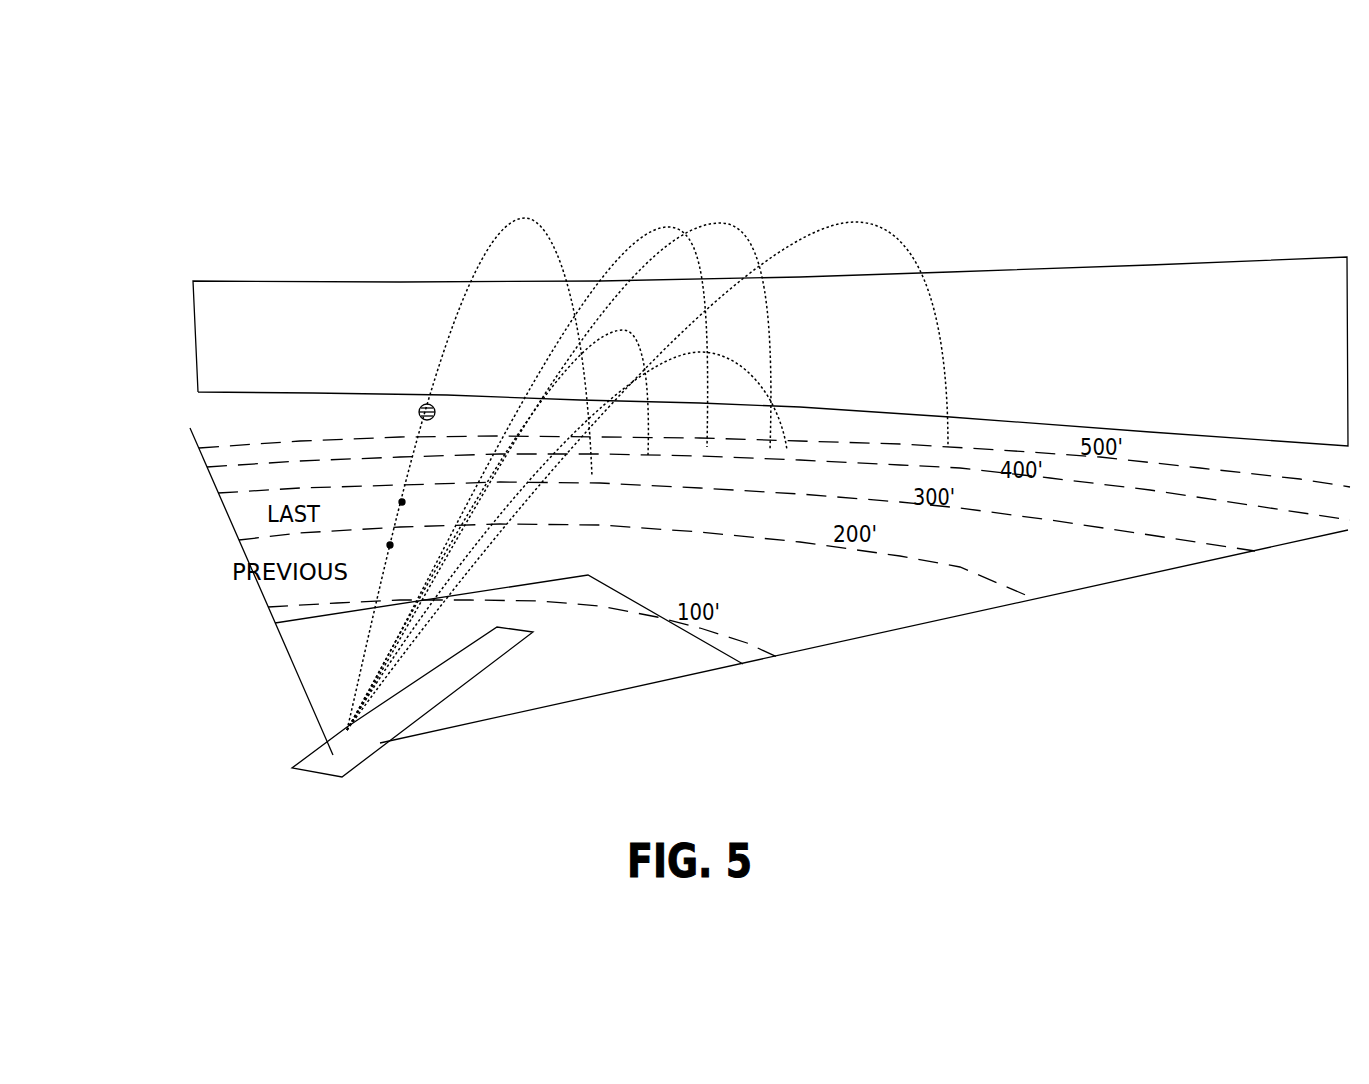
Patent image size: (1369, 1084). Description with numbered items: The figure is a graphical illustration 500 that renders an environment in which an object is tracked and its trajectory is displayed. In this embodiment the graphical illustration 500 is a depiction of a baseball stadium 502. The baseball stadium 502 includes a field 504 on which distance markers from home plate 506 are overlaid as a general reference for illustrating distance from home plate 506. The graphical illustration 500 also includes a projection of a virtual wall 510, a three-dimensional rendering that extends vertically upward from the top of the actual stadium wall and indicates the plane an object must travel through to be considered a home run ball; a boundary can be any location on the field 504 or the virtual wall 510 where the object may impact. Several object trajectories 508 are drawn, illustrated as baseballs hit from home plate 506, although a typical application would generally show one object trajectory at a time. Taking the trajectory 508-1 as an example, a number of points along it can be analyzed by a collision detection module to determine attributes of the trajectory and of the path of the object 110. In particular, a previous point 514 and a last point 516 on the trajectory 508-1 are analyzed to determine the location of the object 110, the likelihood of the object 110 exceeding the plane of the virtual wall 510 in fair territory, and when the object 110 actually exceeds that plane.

The graphical illustration 500 is at (107, 134).
The baseball stadium 502 is at (1062, 225).
The field 504 is at (857, 622).
The home plate 506 is at (330, 743).
The object trajectories 508 is at (647, 445).
The trajectory 508-1 is at (484, 263).
The virtual wall 510 is at (289, 293).
The object 110 is at (419, 413).
The previous point 514 is at (388, 546).
The last point 516 is at (399, 502).